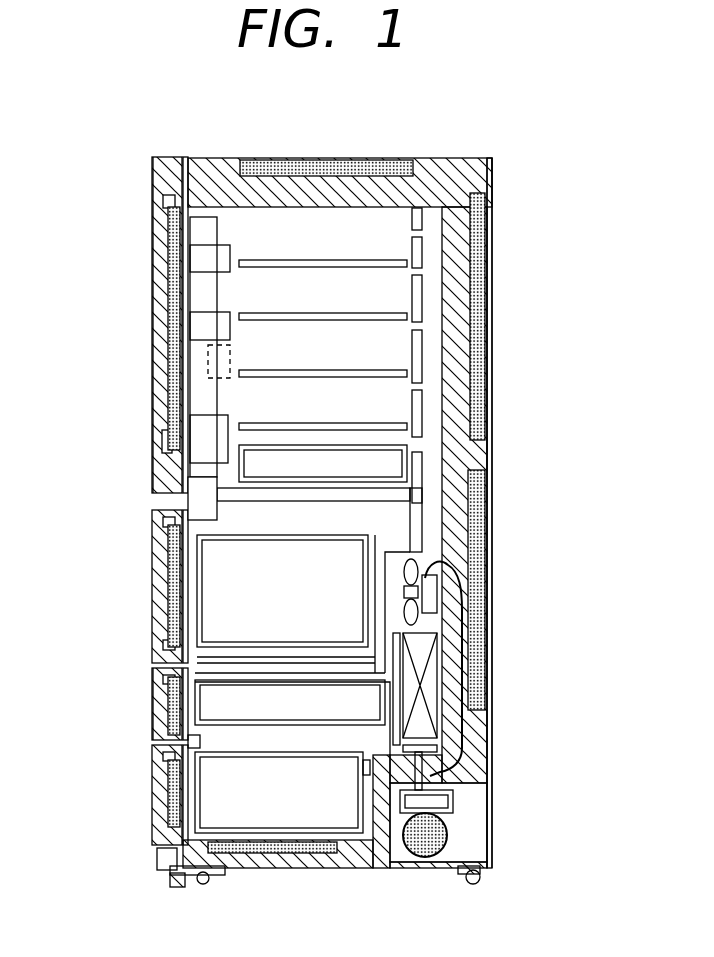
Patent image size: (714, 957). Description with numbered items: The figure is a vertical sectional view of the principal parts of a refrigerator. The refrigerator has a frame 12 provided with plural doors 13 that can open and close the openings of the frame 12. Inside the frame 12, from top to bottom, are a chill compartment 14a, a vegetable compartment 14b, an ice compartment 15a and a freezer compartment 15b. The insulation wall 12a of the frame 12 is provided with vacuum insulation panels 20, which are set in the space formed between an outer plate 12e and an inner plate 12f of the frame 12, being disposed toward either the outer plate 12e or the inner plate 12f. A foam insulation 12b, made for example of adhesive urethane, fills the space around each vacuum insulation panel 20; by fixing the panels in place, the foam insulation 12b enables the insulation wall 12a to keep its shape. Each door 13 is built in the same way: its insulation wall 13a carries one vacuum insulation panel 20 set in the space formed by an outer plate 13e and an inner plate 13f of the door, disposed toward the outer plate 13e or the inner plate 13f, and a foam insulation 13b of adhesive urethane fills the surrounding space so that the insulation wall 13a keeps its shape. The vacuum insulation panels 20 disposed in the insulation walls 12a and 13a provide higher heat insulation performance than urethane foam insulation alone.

The frame 12 is at (493, 160).
The insulation wall 12a is at (367, 160).
The foam insulation 12b is at (492, 445).
The outer plate 12e is at (492, 365).
The inner plate 12f is at (430, 255).
The door 13 is at (153, 185).
The insulation wall 13a is at (153, 262).
The foam insulation 13b is at (158, 333).
The outer plate 13e is at (155, 463).
The inner plate 13f is at (187, 495).
The chill compartment 14a is at (330, 306).
The vegetable compartment 14b is at (300, 596).
The ice compartment 15a is at (298, 711).
The freezer compartment 15b is at (298, 803).
The vacuum insulation panel 20 is at (283, 160).